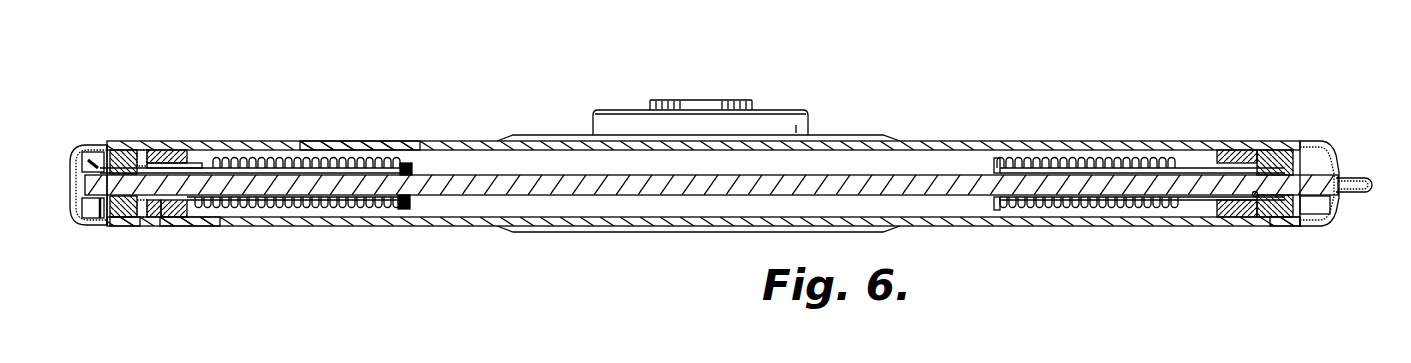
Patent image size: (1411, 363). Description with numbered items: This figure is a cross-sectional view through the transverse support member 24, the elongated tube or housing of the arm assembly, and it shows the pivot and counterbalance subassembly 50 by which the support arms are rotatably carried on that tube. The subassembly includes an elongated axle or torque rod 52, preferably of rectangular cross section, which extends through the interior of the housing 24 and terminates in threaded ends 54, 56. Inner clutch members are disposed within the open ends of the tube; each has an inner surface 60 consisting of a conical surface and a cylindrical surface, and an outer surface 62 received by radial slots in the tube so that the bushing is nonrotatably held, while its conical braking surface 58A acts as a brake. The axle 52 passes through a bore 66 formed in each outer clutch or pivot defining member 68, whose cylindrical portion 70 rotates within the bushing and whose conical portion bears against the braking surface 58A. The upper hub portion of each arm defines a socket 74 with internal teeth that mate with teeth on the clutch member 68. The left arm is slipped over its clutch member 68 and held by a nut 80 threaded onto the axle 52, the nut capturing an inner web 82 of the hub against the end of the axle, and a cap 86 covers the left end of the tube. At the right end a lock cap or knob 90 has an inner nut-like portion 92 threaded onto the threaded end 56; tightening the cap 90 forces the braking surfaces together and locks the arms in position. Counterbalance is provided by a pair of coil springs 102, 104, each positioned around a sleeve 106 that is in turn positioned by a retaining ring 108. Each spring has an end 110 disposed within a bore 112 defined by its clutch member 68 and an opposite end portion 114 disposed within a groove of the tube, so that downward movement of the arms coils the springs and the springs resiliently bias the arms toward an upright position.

The transverse support member 24 is at (985, 140).
The pivot and counterbalance subassembly 50 is at (316, 127).
The torque rod 52 is at (536, 182).
The threaded end 54 is at (1328, 150).
The threaded end 56 is at (78, 146).
The conical braking surface 58A is at (168, 213).
The inner surface 60 is at (148, 213).
The outer surface 62 is at (190, 224).
The bore 66 is at (1255, 200).
The outer clutch member 68 is at (1282, 223).
The cylindrical portion 70 is at (1225, 207).
The socket 74 is at (127, 225).
The nut 80 is at (98, 198).
The inner web 82 is at (119, 149).
The cap 86 is at (89, 176).
The lock cap 90 is at (1340, 212).
The nut-like portion 92 is at (1342, 177).
The coil spring 102 is at (363, 129).
The coil spring 104 is at (1073, 160).
The sleeve 106 is at (400, 163).
The retaining ring 108 is at (412, 197).
The spring end 110 is at (193, 167).
The bore 112 is at (170, 150).
The opposite end portion 114 is at (410, 207).